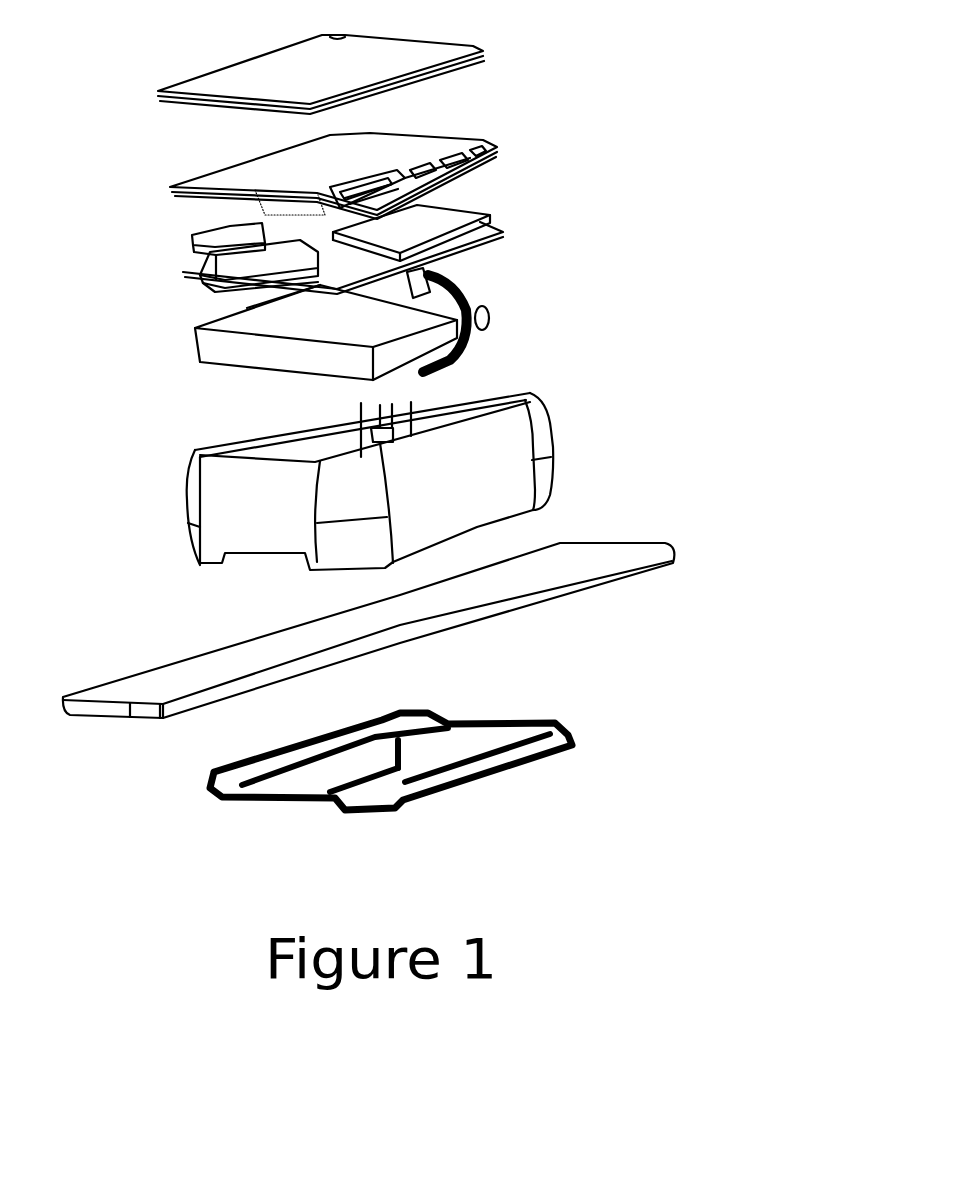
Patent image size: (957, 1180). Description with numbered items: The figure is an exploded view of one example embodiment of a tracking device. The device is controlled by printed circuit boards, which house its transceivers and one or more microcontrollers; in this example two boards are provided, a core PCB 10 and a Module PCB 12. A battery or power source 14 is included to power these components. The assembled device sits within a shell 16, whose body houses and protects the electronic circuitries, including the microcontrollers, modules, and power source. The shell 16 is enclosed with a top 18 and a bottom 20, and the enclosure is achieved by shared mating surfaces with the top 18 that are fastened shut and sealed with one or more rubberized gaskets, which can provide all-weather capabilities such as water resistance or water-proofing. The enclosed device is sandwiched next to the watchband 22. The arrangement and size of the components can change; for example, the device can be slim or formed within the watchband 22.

The core PCB 10 is at (498, 141).
The Module PCB 12 is at (183, 270).
The battery or power source 14 is at (490, 320).
The shell 16 is at (188, 497).
The top 18 is at (155, 91).
The bottom 20 is at (453, 793).
The watchband 22 is at (148, 718).